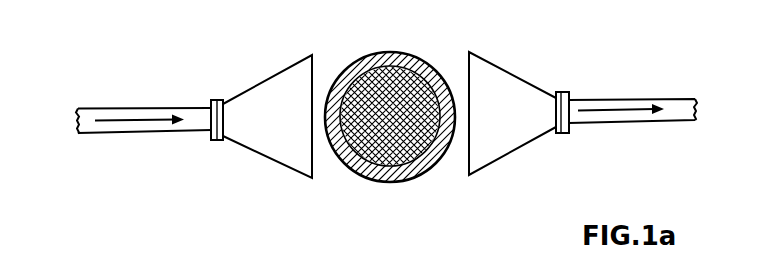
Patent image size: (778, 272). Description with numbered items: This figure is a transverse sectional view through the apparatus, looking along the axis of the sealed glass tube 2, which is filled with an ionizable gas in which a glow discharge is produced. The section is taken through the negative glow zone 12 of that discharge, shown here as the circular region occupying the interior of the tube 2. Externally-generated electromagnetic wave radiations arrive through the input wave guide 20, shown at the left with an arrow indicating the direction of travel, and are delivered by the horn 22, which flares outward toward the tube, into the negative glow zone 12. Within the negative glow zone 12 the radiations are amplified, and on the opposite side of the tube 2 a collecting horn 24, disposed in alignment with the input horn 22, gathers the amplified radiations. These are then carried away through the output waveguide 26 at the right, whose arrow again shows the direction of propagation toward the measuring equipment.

The sealed glass tube 2 is at (422, 167).
The negative glow zone 12 is at (403, 78).
The input wave guide 20 is at (122, 110).
The horn 22 is at (253, 139).
The collecting horn 24 is at (508, 88).
The waveguide 26 is at (647, 101).